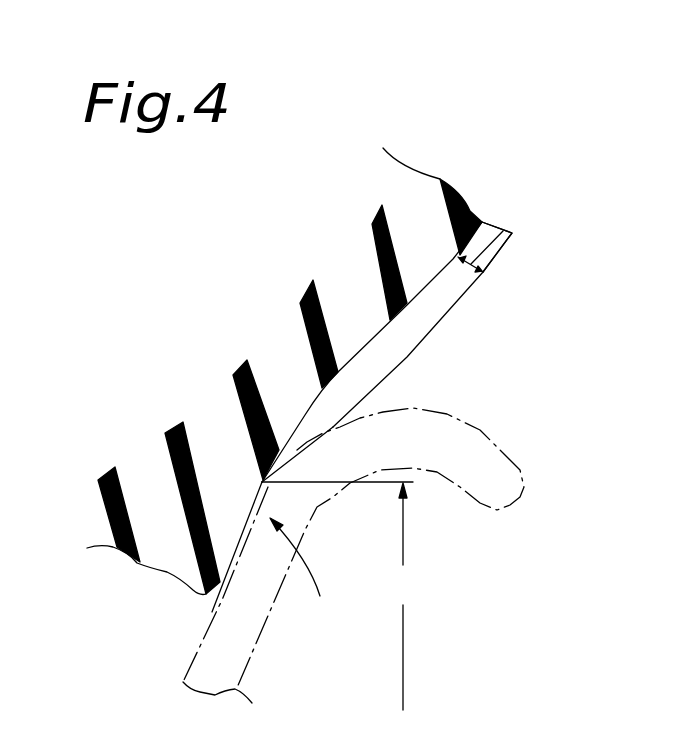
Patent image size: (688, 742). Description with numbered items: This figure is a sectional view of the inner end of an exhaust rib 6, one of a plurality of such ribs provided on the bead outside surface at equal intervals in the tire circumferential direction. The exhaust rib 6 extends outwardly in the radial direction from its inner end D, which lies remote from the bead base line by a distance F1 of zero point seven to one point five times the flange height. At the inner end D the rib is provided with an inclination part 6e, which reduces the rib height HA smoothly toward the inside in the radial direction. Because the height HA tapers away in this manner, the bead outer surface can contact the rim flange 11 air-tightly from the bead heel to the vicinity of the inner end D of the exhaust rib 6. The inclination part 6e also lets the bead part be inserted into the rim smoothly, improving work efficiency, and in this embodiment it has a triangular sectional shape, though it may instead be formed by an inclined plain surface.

The exhaust rib 6 is at (407, 357).
The inclination part 6e is at (292, 455).
The rim flange 11 is at (527, 490).
The height of the exhaust rib HA is at (512, 233).
The distance from bead base line to inner end F1 is at (340, 596).
The inner end of the exhaust rib D is at (302, 573).